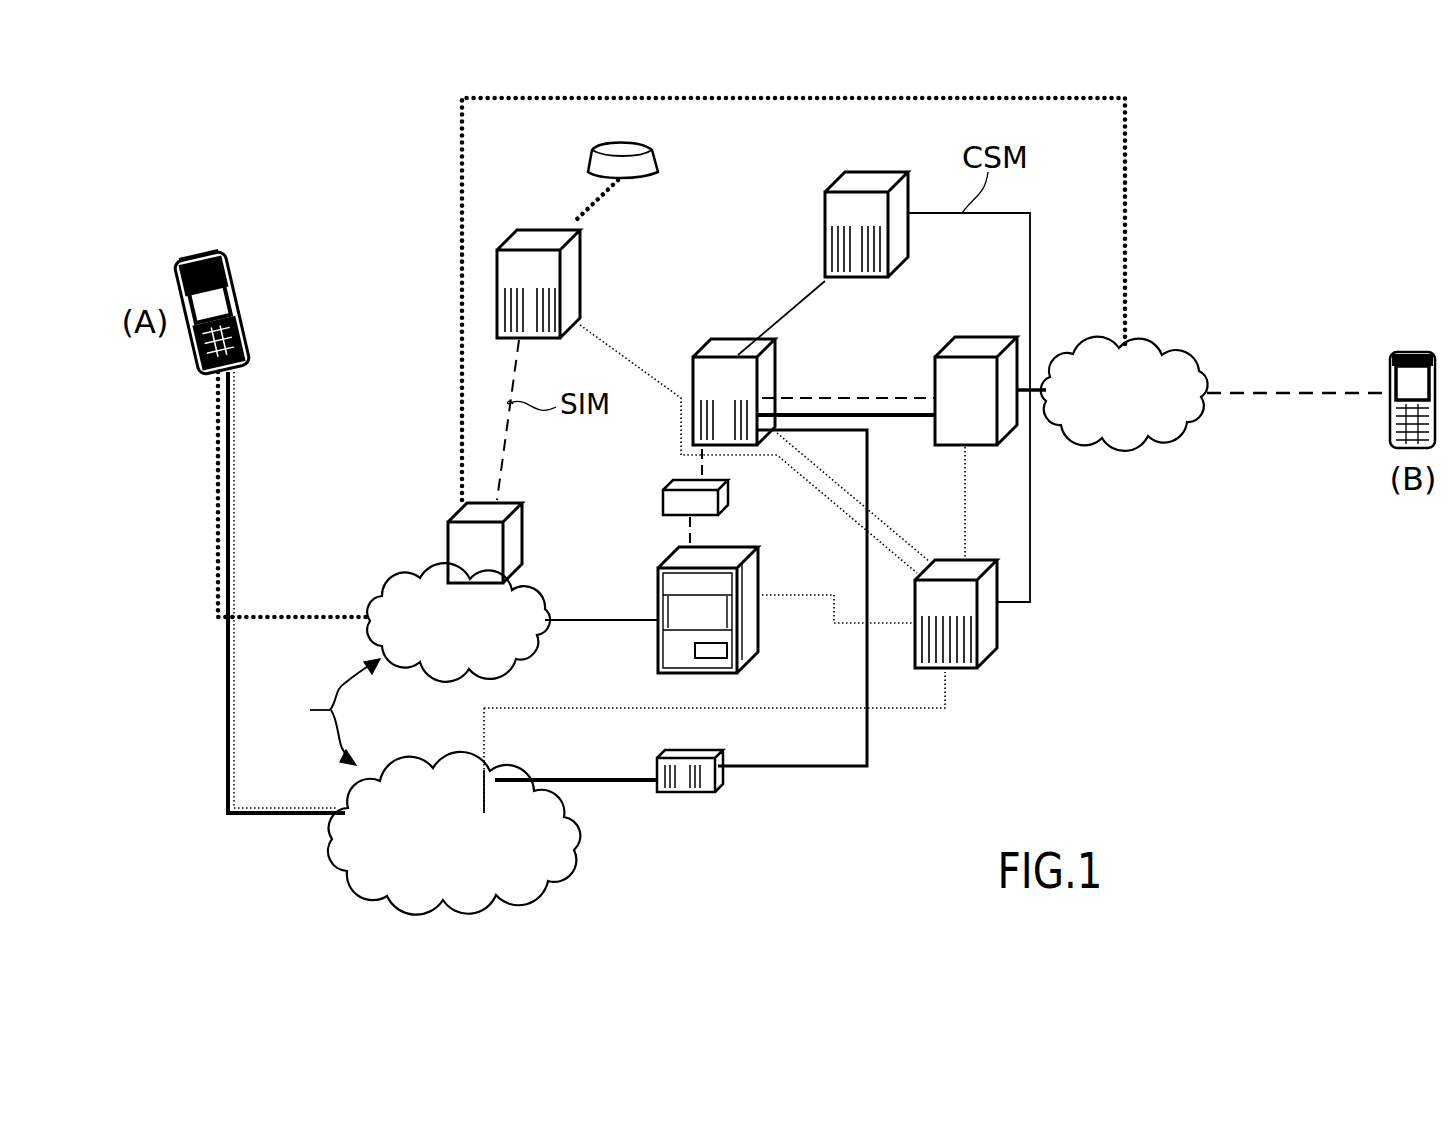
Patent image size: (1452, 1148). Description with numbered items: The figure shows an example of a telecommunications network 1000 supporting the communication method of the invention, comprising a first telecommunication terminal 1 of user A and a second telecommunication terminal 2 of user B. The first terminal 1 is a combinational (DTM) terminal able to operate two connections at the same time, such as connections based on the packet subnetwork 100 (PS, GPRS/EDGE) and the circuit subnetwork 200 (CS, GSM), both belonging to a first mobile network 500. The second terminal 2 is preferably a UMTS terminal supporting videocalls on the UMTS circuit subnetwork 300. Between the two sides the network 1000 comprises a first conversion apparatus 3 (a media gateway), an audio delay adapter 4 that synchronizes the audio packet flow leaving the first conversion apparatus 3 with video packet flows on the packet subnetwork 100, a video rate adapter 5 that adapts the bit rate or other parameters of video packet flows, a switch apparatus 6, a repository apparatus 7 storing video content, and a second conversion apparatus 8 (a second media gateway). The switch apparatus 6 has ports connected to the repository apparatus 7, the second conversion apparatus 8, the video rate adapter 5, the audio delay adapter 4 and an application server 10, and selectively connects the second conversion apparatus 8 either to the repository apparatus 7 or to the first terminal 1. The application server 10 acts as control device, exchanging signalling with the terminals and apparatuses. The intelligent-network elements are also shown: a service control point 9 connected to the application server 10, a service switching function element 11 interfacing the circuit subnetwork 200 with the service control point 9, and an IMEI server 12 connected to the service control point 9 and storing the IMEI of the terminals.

The first telecommunication terminal 1 is at (214, 256).
The second telecommunication terminal 2 is at (1405, 352).
The first conversion apparatus 3 is at (748, 634).
The audio delay adapter 4 is at (665, 494).
The video rate adapter 5 is at (722, 792).
The switch apparatus 6 is at (773, 366).
The repository apparatus 7 is at (873, 184).
The second conversion apparatus 8 is at (970, 348).
The service control point 9 is at (568, 296).
The application server 10 is at (995, 662).
The service switching function element 11 is at (452, 520).
The IMEI server 12 is at (658, 156).
The packet subnetwork 100 is at (376, 774).
The circuit subnetwork 200 is at (400, 589).
The UMTS circuit subnetwork 300 is at (1168, 358).
The first mobile network 500 is at (315, 712).
The telecommunications network 1000 is at (1215, 169).